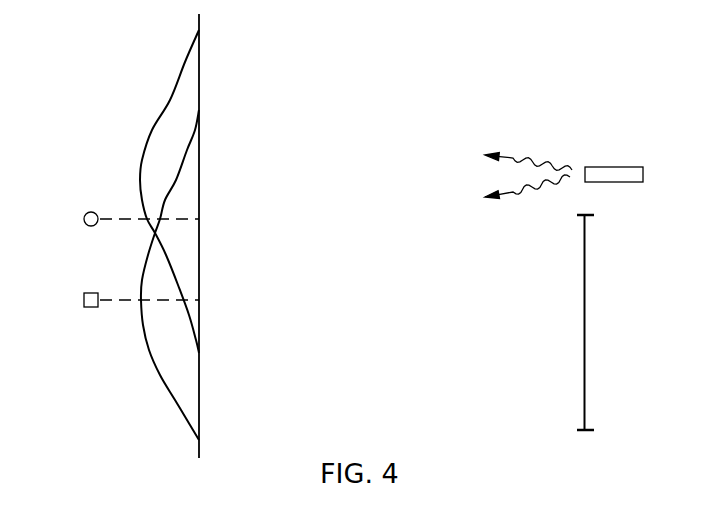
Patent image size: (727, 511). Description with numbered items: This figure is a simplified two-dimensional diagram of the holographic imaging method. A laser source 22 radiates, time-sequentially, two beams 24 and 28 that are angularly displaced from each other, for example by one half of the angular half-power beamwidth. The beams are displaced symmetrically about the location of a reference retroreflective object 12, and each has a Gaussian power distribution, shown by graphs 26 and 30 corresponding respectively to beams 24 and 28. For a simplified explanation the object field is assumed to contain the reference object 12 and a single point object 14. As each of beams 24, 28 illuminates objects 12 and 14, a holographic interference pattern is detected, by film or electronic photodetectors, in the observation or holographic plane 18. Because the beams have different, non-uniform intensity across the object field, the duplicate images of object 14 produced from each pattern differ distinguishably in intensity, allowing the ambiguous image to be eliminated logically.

The reference retroreflective object 12 is at (83, 215).
The point object 14 is at (84, 303).
The holographic plane 18 is at (584, 367).
The laser source 22 is at (614, 167).
The first laser beam 24 is at (517, 155).
The power distribution graph of first beam 26 is at (148, 132).
The second laser beam 28 is at (513, 193).
The power distribution graph of second beam 30 is at (155, 355).